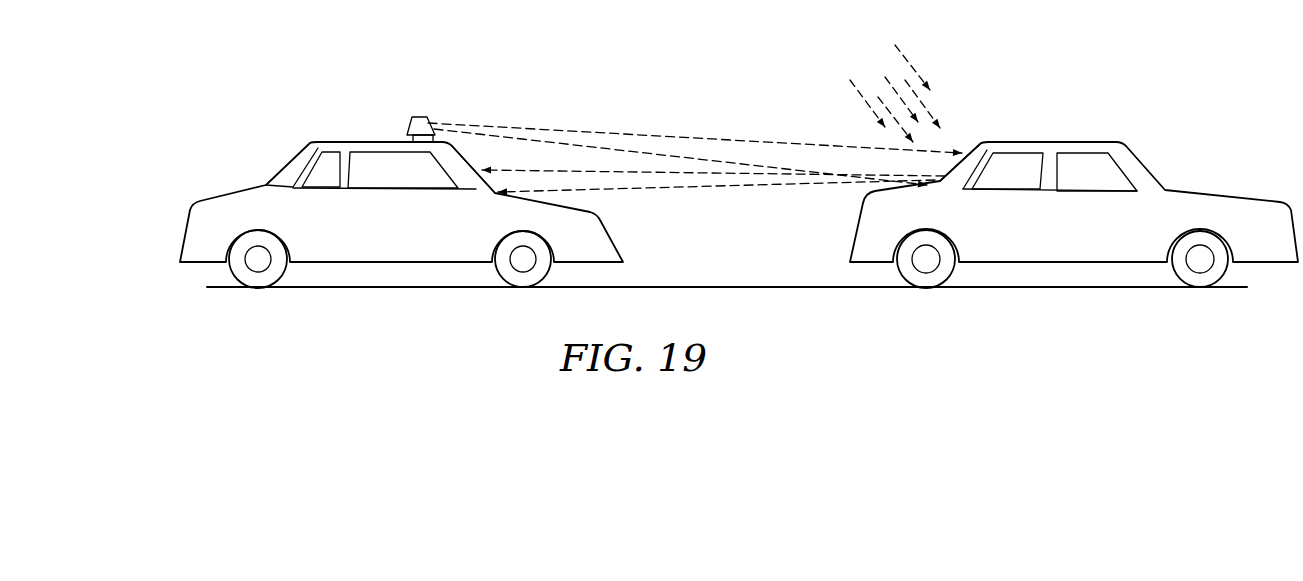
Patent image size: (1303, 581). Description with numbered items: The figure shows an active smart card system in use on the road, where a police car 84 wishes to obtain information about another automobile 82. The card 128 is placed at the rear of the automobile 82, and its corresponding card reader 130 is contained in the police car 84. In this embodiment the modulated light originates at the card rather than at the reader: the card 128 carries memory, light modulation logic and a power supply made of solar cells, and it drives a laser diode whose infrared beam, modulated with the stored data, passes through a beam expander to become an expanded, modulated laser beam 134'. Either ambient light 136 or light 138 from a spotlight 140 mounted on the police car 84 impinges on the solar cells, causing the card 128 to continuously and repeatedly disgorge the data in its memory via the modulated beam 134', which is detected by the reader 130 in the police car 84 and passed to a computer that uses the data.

The automobile 82 is at (1105, 142).
The police car 84 is at (343, 140).
The active smart card 128 is at (947, 160).
The card reader 130 is at (473, 186).
The expanded modulated laser beam 134' is at (713, 195).
The ambient light 136 is at (912, 65).
The light from spotlight 138 is at (612, 148).
The spotlight 140 is at (422, 121).